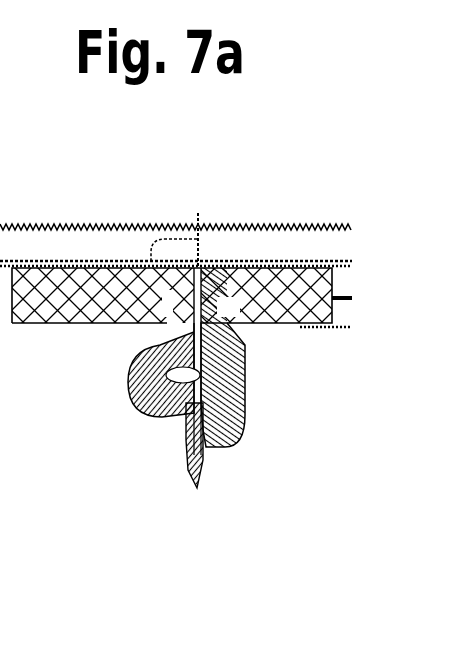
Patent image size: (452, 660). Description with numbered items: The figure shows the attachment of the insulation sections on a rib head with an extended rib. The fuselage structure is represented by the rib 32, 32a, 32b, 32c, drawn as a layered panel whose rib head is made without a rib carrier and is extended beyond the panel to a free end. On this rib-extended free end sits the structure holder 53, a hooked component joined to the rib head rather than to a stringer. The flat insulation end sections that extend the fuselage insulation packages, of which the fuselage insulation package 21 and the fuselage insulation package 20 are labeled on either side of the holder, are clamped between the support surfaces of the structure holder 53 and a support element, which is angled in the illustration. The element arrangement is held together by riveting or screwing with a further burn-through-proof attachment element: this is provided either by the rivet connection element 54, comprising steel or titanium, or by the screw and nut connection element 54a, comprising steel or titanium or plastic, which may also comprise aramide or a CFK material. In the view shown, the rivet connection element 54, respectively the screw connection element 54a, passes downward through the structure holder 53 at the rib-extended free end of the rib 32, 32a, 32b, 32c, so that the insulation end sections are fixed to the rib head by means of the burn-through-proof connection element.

The rib 32 is at (194, 362).
The rib 32a is at (175, 199).
The rib 32b is at (176, 225).
The rib 32c is at (176, 267).
The fuselage insulation package 21 is at (90, 307).
The structure holder 53 is at (196, 413).
The fuselage insulation package 20 is at (236, 420).
The rivet connection element 54 is at (195, 447).
The screw and nut connection element 54a is at (197, 429).